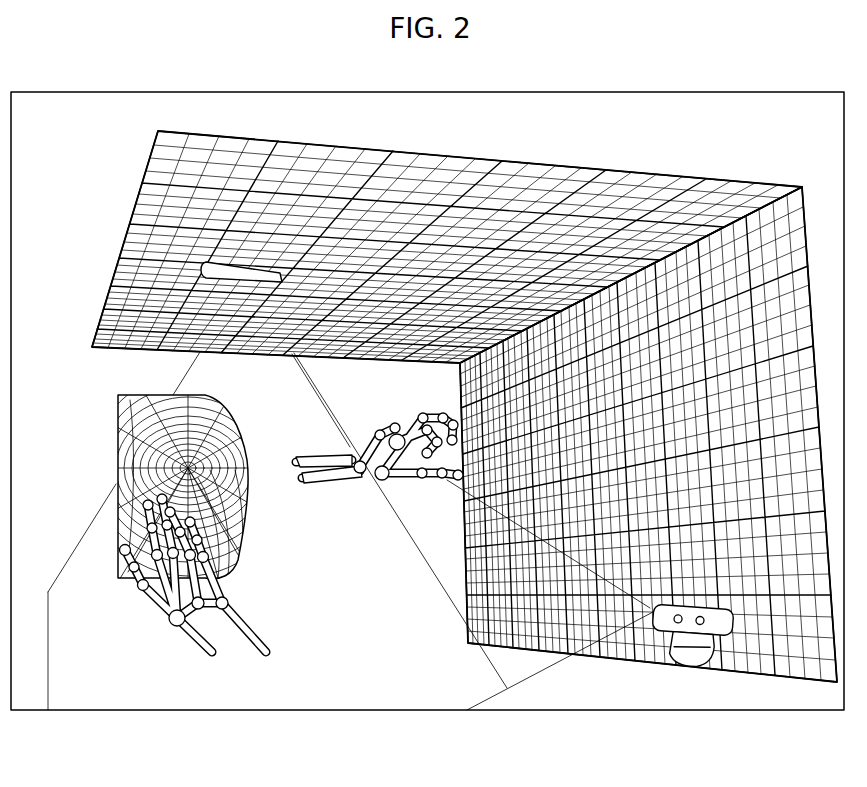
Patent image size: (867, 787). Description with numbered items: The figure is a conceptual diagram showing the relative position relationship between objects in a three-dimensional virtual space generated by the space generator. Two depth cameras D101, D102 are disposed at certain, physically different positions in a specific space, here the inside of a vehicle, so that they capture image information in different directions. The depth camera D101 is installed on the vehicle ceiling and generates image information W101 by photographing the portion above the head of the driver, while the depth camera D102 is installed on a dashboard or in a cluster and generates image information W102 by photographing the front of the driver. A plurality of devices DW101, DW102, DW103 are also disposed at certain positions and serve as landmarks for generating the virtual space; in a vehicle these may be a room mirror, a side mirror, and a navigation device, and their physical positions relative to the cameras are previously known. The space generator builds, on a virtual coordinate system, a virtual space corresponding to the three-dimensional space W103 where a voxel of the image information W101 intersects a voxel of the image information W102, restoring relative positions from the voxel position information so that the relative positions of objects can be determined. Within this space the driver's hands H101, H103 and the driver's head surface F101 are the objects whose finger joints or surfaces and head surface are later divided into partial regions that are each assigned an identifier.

The depth camera D101 is at (263, 466).
The depth camera D102 is at (637, 595).
The image information W101 is at (447, 247).
The image information W102 is at (648, 434).
The 3D space W103 is at (314, 547).
The device DW101 is at (579, 310).
The device DW102 is at (550, 605).
The device DW103 is at (771, 645).
The finger joint or surface of the driver H101 is at (182, 573).
The second hand H103 is at (379, 445).
The 3D head surface F101 is at (118, 578).